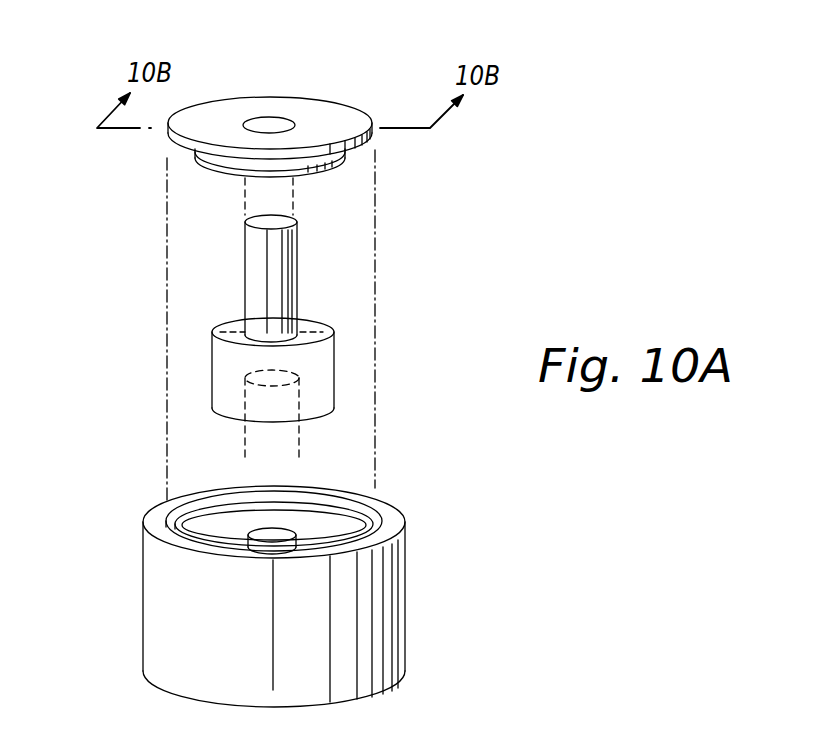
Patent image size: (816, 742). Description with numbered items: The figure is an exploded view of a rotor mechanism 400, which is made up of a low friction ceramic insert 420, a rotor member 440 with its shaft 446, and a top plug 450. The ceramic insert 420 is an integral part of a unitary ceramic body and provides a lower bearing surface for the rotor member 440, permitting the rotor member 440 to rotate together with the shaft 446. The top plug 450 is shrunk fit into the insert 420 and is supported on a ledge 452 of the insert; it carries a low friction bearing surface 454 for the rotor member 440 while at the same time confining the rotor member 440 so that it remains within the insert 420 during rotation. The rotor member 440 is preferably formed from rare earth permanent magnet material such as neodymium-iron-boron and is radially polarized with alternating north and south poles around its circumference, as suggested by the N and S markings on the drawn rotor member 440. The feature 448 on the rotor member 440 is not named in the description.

The rotor mechanism 400 is at (310, 77).
The low friction ceramic insert 420 is at (178, 596).
The rotor member 440 is at (327, 390).
The shaft 446 is at (277, 267).
The bore in magnet 448 is at (230, 325).
The top plug 450 is at (167, 140).
The ledge 452 is at (352, 517).
The low friction bearing surface 454 is at (227, 172).